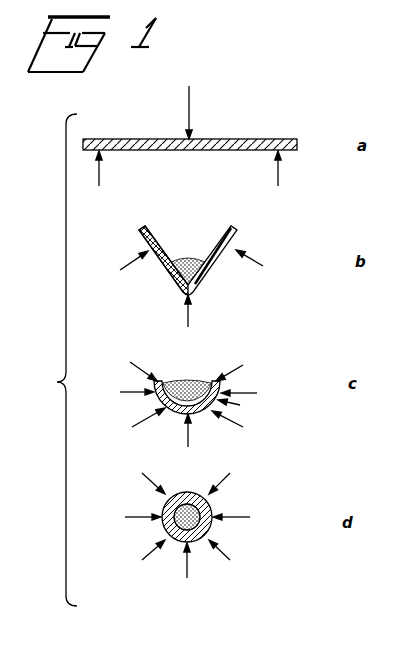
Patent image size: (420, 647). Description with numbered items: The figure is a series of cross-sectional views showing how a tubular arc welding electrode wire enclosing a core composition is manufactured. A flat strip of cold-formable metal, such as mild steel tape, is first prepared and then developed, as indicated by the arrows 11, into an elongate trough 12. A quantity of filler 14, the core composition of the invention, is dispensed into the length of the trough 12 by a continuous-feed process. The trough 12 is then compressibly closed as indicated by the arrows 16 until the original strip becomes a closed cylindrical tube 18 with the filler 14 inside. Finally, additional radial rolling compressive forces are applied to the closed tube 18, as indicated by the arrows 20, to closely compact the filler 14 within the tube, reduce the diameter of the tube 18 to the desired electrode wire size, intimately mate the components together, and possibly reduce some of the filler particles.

The arrows 11 is at (189, 111).
The elongate trough 12 is at (225, 270).
The filler 14 is at (189, 262).
The arrows 16 is at (120, 270).
The closed tube 18 is at (163, 548).
The arrows 20 is at (142, 473).